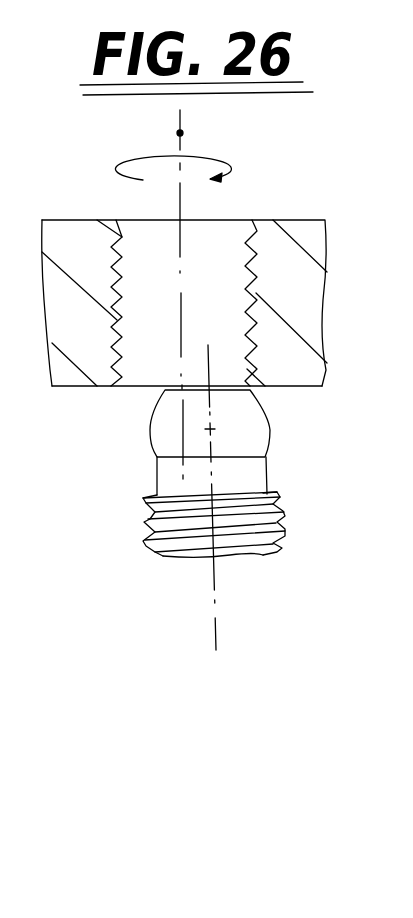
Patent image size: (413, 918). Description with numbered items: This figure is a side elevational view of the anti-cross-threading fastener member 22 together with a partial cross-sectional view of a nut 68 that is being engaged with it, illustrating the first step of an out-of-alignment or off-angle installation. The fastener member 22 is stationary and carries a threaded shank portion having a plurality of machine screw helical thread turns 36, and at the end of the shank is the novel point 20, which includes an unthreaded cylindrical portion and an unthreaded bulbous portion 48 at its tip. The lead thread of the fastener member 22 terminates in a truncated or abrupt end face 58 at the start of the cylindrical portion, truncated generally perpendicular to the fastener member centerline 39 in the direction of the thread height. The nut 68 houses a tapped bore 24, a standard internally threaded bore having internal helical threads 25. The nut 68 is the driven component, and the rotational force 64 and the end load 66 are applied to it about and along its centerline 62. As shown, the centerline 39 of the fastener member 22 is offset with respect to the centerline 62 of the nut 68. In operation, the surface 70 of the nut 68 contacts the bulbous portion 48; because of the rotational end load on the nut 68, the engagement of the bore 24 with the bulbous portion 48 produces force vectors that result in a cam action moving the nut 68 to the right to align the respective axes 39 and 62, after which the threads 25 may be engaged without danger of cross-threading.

The point 20 is at (221, 473).
The fastener member 22 is at (221, 524).
The tapped bore 24 is at (177, 322).
The internal helical threads 25 is at (124, 297).
The machine screw helical thread turns 36 is at (145, 522).
The centerline 39 is at (218, 635).
The bulbous portion 48 is at (253, 417).
The abrupt end face 58 is at (251, 494).
The centerline 62 is at (179, 203).
The rotational force 64 is at (139, 154).
The end load 66 is at (182, 121).
The nut 68 is at (294, 232).
The surface 70 is at (306, 385).